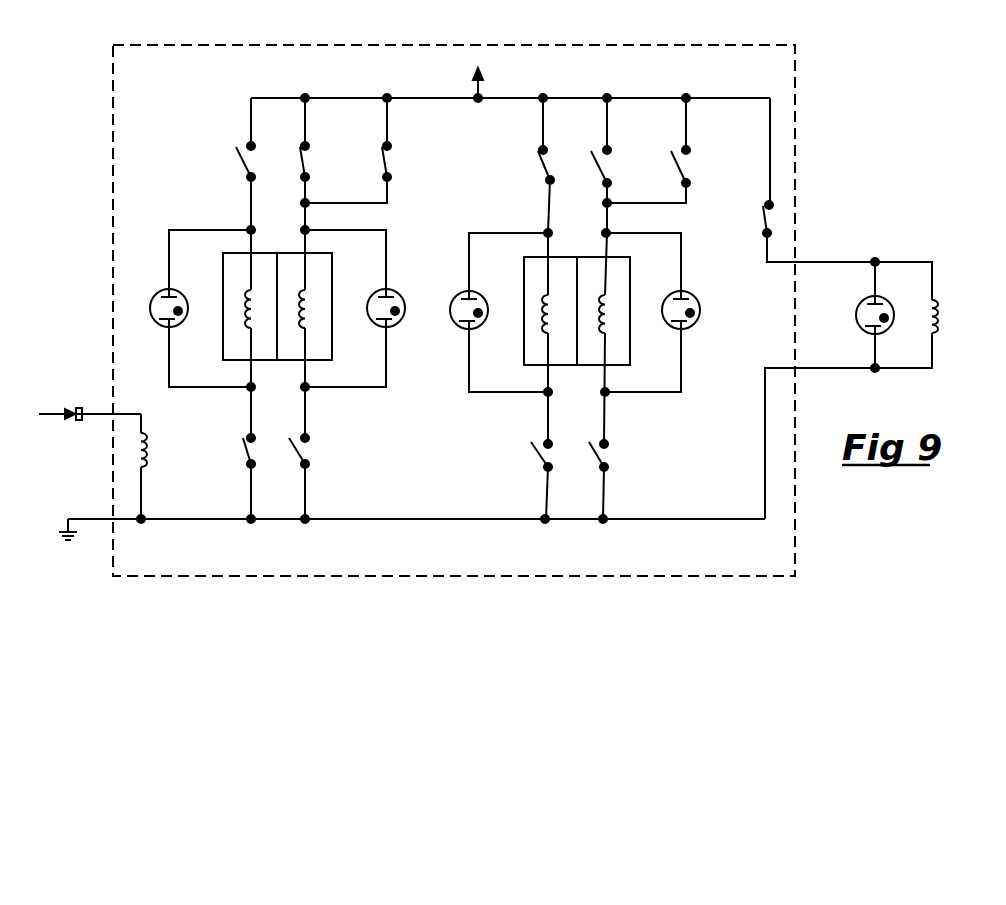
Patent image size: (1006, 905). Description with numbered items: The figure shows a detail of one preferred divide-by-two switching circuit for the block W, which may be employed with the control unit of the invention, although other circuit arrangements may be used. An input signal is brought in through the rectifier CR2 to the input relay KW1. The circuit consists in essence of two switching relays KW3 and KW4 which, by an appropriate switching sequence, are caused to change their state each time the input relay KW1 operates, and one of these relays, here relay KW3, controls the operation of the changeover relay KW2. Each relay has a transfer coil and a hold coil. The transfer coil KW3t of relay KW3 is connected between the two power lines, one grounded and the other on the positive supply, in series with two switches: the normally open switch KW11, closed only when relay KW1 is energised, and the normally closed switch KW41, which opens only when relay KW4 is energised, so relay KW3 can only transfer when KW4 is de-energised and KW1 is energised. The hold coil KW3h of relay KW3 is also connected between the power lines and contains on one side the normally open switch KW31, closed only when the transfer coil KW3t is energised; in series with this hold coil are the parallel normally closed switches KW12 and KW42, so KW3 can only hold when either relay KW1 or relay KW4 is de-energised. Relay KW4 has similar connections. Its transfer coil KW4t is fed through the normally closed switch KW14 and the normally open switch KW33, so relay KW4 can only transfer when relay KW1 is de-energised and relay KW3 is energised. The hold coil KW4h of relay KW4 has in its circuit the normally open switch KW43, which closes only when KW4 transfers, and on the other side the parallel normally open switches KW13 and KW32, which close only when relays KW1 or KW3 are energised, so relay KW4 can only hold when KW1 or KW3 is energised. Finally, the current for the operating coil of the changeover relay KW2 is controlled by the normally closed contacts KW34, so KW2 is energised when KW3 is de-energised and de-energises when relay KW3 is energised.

The divide-by-two circuit block W is at (778, 562).
The rectifier input CR2 is at (90, 401).
The input relay KW1 is at (163, 466).
The normally open switch KW11 is at (224, 161).
The normally closed switch KW12 is at (326, 161).
The normally open switch KW13 is at (623, 166).
The normally closed switch KW14 is at (523, 165).
The changeover relay KW2 is at (958, 316).
The switching relay KW3 is at (274, 317).
The transfer coil of relay KW3 KW3t is at (241, 322).
The hold coil of relay KW3 KW3h is at (306, 302).
The normally open switch KW31 is at (327, 458).
The normally open switch KW32 is at (707, 166).
The normally open switch KW33 is at (518, 463).
The normally closed contacts KW34 is at (740, 226).
The switching relay KW4 is at (573, 321).
The transfer coil of relay KW4 KW4t is at (539, 330).
The hold coil of relay KW4 KW4h is at (606, 302).
The normally closed switch KW41 is at (223, 458).
The normally closed switch KW42 is at (412, 161).
The normally open switch KW43 is at (627, 463).